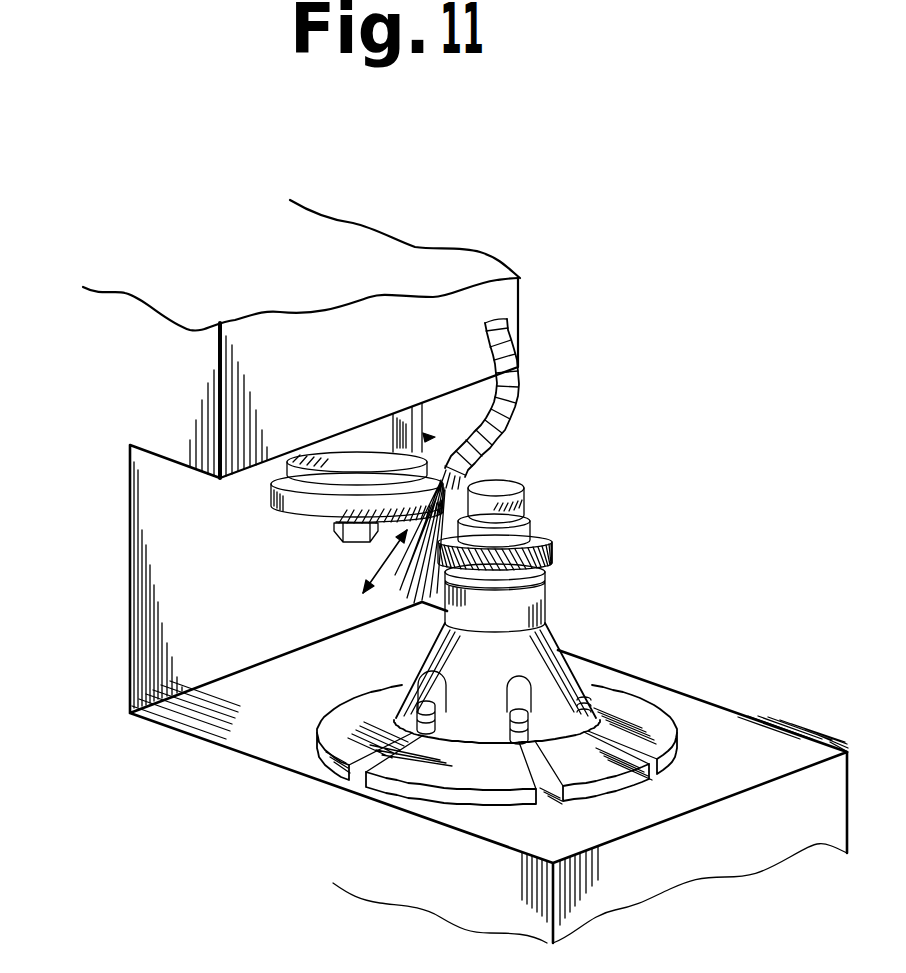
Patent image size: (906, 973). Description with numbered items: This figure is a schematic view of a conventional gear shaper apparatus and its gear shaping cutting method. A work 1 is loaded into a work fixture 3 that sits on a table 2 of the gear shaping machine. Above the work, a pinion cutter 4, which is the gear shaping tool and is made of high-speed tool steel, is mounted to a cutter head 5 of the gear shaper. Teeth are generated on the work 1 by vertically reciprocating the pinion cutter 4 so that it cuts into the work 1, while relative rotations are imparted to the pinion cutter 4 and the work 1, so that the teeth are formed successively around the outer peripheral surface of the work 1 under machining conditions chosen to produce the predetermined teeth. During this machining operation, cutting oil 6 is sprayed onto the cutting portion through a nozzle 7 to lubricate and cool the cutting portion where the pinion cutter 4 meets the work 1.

The work 1 is at (553, 548).
The table 2 is at (585, 763).
The work fixture 3 is at (527, 497).
The pinion cutter 4 is at (310, 512).
The cutter head 5 is at (370, 443).
The cutting oil 6 is at (412, 583).
The nozzle 7 is at (520, 398).